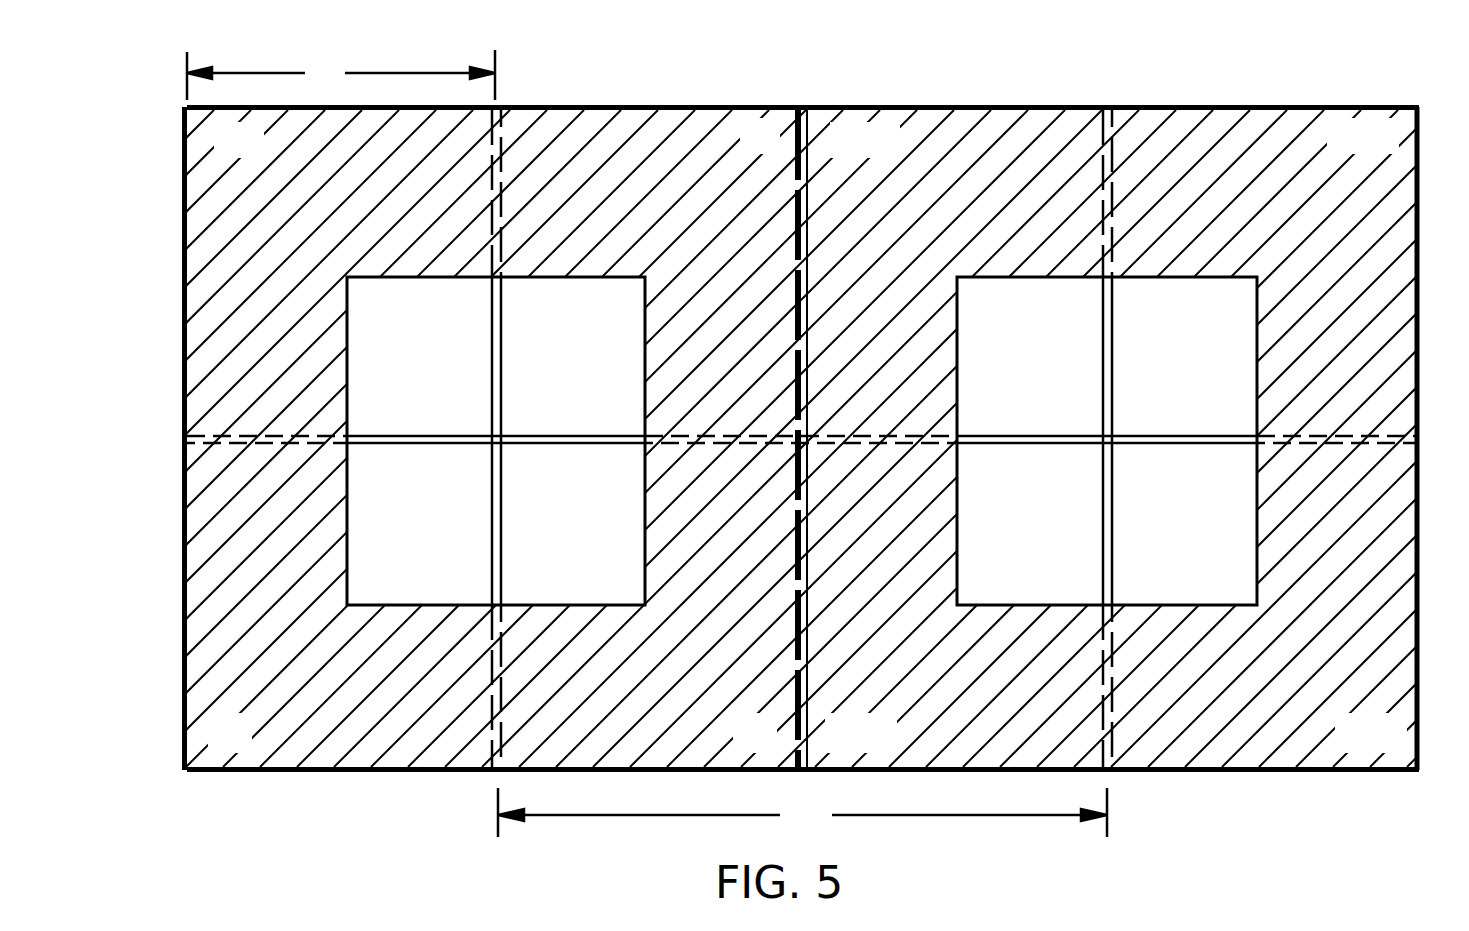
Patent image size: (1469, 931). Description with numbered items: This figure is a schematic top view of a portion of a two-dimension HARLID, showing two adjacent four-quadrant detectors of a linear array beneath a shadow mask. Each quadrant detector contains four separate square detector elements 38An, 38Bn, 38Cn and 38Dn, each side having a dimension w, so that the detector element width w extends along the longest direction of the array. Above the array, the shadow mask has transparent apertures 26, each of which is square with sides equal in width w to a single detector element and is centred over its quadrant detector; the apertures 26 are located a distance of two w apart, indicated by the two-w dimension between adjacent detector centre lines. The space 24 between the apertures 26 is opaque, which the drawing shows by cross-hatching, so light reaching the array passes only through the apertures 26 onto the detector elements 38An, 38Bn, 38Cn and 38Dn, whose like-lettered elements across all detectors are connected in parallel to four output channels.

The space between apertures 24 is at (905, 262).
The transparent aperture 26 is at (590, 275).
The detector element A of quadrant detector n 38An is at (187, 282).
The detector element B of quadrant detector n 38Bn is at (723, 108).
The detector element C of quadrant detector n 38Cn is at (187, 542).
The detector element D of quadrant detector n 38Dn is at (578, 768).